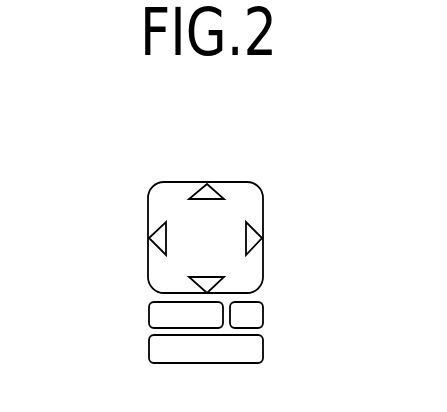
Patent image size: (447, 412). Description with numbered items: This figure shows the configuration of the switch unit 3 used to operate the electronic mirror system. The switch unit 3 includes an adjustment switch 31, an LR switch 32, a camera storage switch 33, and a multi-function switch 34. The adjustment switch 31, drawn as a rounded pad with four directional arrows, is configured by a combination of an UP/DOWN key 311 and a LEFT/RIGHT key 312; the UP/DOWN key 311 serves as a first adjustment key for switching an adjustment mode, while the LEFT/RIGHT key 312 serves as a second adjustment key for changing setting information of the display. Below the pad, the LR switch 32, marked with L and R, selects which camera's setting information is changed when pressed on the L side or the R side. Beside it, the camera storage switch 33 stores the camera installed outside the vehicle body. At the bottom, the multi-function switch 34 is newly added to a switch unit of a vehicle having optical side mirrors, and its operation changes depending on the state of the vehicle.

The switch unit 3 is at (234, 175).
The adjustment switch 31 is at (162, 203).
The UP/DOWN key 311 is at (202, 192).
The LEFT/RIGHT key 312 is at (150, 236).
The LR switch 32 is at (150, 318).
The camera storage switch 33 is at (253, 315).
The multi-function switch 34 is at (162, 348).